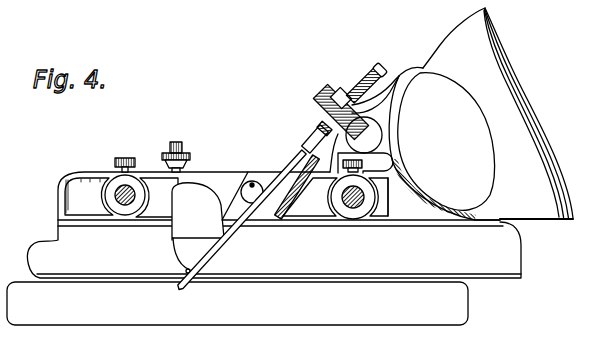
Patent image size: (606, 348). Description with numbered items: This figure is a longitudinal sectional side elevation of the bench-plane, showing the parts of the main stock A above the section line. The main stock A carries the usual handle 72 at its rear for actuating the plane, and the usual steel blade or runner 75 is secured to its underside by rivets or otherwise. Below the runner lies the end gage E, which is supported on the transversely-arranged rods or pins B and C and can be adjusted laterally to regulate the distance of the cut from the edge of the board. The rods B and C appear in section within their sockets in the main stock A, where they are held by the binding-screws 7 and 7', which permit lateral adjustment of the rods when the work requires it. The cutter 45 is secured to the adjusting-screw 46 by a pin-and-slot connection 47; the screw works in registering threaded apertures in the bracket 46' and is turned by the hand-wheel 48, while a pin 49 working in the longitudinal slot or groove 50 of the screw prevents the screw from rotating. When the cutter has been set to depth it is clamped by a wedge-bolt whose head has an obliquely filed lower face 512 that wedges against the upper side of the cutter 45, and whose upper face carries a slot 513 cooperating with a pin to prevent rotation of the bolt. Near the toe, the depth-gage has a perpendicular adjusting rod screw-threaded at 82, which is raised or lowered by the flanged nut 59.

The binding-screw 7' is at (125, 154).
The screw-threaded adjusting rod 82 is at (176, 142).
The flanged nut 59 is at (190, 157).
The slot 513 is at (250, 175).
The oblique lower face 512 is at (253, 183).
The hand-wheel 48 is at (313, 94).
The pin-and-slot connection 47 is at (306, 142).
The bracket 46' is at (336, 89).
The adjusting-screw 46 is at (365, 77).
The longitudinal slot or groove 50 is at (379, 70).
The pin 49 is at (387, 94).
The binding-screw 7 is at (356, 153).
The handle 72 is at (481, 114).
The steel blade or runner 75 is at (274, 225).
The cutter 45 is at (219, 247).
The main stock A is at (395, 197).
The transversely-arranged rod or pin B is at (353, 208).
The transversely-arranged rod or pin C is at (123, 205).
The end gage E is at (237, 303).